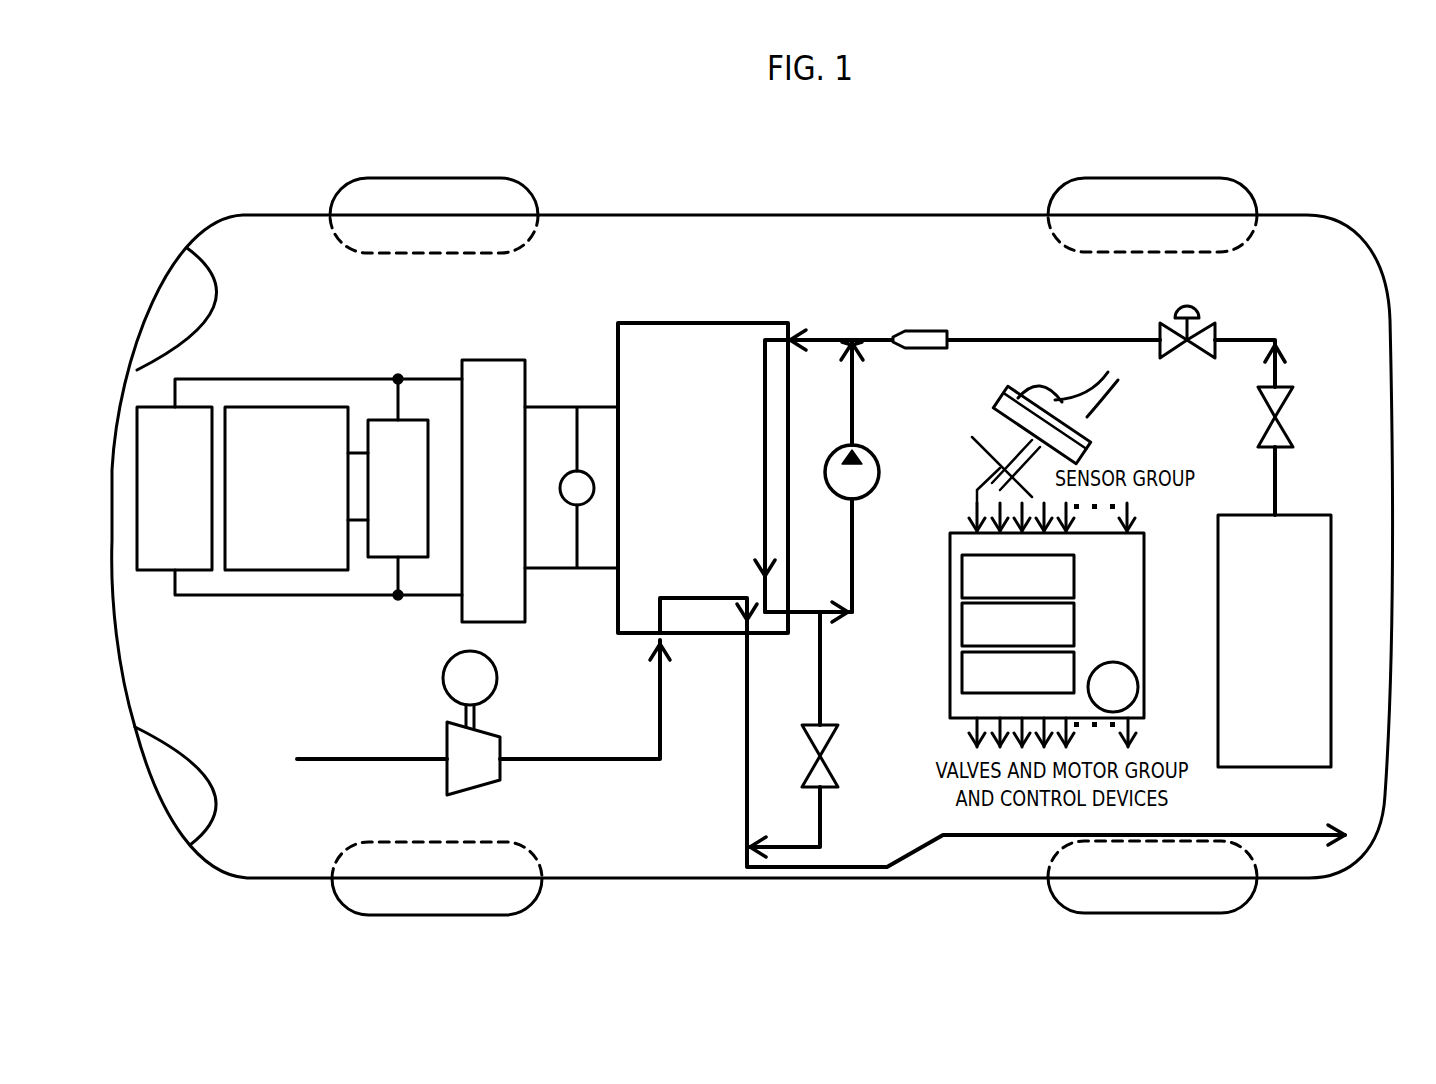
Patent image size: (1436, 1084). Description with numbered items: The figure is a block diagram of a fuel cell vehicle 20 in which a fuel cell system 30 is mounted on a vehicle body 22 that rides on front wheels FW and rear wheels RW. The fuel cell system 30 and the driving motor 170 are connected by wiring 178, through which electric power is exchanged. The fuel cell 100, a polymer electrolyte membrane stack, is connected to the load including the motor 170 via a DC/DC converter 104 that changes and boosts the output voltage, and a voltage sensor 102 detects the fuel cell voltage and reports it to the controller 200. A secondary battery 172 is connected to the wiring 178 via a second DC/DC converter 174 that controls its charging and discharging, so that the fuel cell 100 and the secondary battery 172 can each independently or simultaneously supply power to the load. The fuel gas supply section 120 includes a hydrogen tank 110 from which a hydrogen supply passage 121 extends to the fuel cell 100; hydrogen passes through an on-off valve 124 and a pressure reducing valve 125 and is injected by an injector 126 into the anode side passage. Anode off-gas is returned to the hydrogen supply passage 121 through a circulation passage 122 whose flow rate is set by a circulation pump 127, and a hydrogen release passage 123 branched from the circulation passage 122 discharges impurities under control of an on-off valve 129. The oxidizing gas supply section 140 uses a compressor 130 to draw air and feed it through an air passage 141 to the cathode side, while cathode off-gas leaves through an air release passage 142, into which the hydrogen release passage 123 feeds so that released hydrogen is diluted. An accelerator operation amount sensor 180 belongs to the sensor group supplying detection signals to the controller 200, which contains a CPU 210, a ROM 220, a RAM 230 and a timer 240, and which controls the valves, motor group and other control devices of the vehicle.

The fuel cell vehicle 20 is at (843, 172).
The vehicle body 22 is at (750, 215).
The front wheels FW is at (503, 180).
The rear wheels RW is at (1225, 178).
The fuel cell system 30 is at (842, 285).
The fuel cell 100 is at (788, 323).
The voltage sensor 102 is at (590, 470).
The DC/DC converter 104 is at (497, 360).
The driving motor 170 is at (182, 398).
The secondary battery 172 is at (285, 407).
The DC/DC converter 174 is at (378, 420).
The wiring 178 is at (200, 596).
The oxidizing gas supply section 140 is at (292, 690).
The air passage 141 is at (345, 759).
The compressor 130 is at (445, 780).
The fuel gas supply section 120 is at (1353, 297).
The hydrogen tank 110 is at (1299, 515).
The hydrogen supply passage 121 is at (980, 338).
The circulation passage 122 is at (853, 582).
The hydrogen release passage 123 is at (820, 717).
The on-off valve 124 is at (1258, 427).
The pressure reducing valve 125 is at (1215, 325).
The injector 126 is at (932, 331).
The circulation pump 127 is at (866, 495).
The on-off valve 129 is at (838, 772).
The air release passage 142 is at (963, 838).
The accelerator operation amount sensor 180 is at (1005, 403).
The controller 200 is at (1145, 533).
The central processing unit (CPU) 210 is at (1074, 577).
The read only memory (ROM) 220 is at (1074, 625).
The random access memory (RAM) 230 is at (1074, 663).
The timer 240 is at (1138, 708).